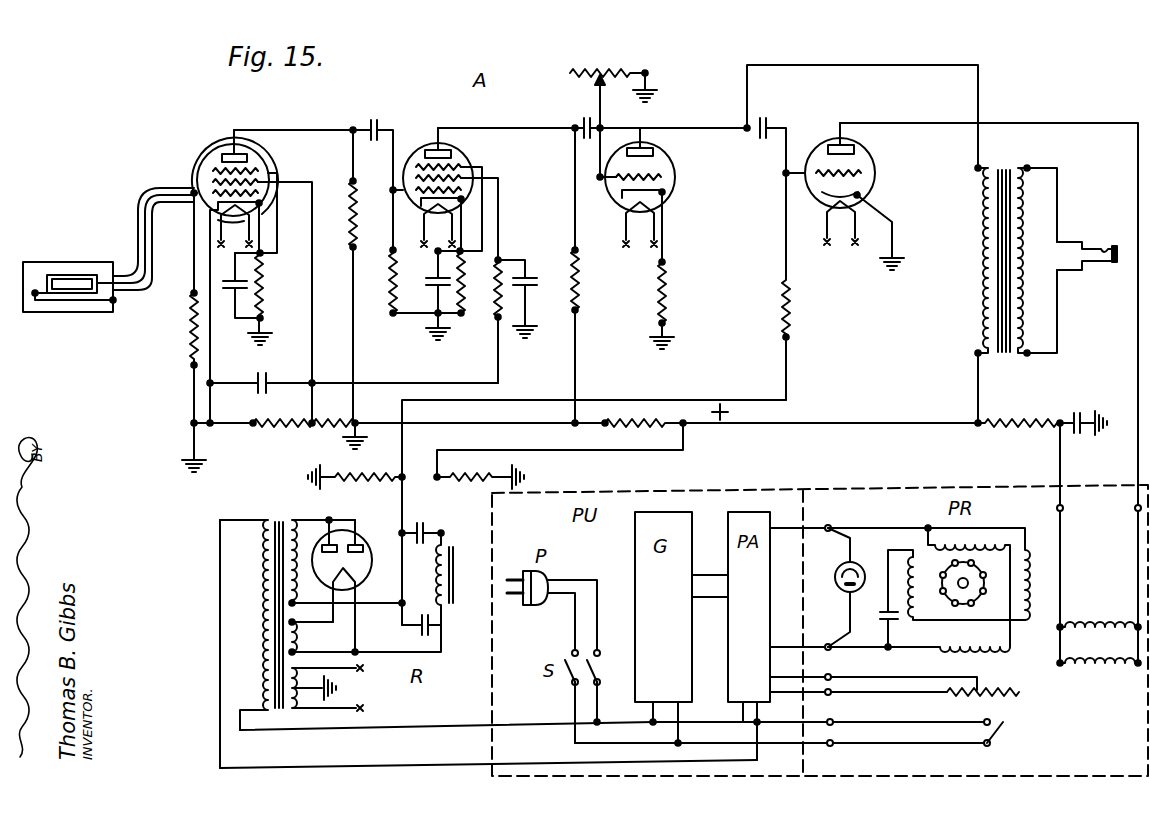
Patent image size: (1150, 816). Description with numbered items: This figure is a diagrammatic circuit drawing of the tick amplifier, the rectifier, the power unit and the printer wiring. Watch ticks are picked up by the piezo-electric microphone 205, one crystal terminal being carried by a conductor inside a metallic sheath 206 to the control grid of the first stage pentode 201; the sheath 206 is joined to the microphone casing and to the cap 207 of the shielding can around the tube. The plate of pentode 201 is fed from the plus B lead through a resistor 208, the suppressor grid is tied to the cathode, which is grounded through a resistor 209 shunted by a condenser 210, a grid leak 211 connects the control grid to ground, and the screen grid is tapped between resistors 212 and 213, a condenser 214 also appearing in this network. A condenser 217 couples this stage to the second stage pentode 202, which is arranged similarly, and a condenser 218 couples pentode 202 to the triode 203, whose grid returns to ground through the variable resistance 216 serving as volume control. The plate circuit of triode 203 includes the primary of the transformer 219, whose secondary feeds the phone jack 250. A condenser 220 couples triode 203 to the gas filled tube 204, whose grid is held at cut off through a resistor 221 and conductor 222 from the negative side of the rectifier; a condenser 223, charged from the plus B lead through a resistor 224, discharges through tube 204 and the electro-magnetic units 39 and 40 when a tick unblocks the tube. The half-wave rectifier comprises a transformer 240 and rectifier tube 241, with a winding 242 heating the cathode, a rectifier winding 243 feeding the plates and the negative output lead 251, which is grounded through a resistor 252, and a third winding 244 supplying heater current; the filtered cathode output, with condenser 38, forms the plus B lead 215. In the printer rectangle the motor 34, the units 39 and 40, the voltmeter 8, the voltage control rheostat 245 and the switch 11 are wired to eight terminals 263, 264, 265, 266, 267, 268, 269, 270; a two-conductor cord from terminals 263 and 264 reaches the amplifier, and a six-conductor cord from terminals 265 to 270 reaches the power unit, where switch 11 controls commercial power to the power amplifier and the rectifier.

The first stage pentode 201 is at (273, 156).
The second stage pentode 202 is at (473, 156).
The triode 203 is at (674, 160).
The gas filled tube 204 is at (869, 157).
The microphone 205 is at (60, 260).
The sheath 206 is at (138, 220).
The cap of the shielding can 207 is at (213, 148).
The resistor 208 is at (351, 181).
The resistor 209 is at (266, 292).
The condenser 210 is at (231, 297).
The grid leak 211 is at (186, 334).
The resistor 212 is at (283, 432).
The resistor 213 is at (331, 432).
The by-pass condenser 214 is at (264, 375).
The plus B lead 215 is at (625, 451).
The variable resistance 216 is at (613, 115).
The condenser 217 is at (375, 118).
The condenser 218 is at (585, 118).
The transformer 219 is at (1016, 284).
The condenser 220 is at (767, 116).
The resistor 221 is at (797, 315).
The conductor 222 is at (620, 398).
The condenser 223 is at (1080, 400).
The resistor 224 is at (1022, 427).
The transformer 240 is at (254, 632).
The rectifier tube 241 is at (360, 541).
The winding 242 is at (298, 636).
The rectifier winding 243 is at (295, 570).
The third winding 244 is at (305, 700).
The voltage control rheostat 245 is at (997, 688).
The phone jack 250 is at (1087, 246).
The negative output lead 251 is at (403, 512).
The resistor 252 is at (361, 488).
The terminal 263 is at (1136, 512).
The terminal 264 is at (1062, 512).
The terminal 265 is at (827, 533).
The terminal 266 is at (829, 643).
The terminal 267 is at (835, 678).
The terminal 268 is at (832, 696).
The terminal 269 is at (836, 724).
The terminal 270 is at (836, 745).
The voltmeter 8 is at (858, 565).
The switch 11 is at (1005, 730).
The motor 34 is at (929, 588).
The condenser 38 is at (880, 614).
The electro-magnetic unit 39 is at (1095, 622).
The electro-magnetic unit 40 is at (1100, 660).